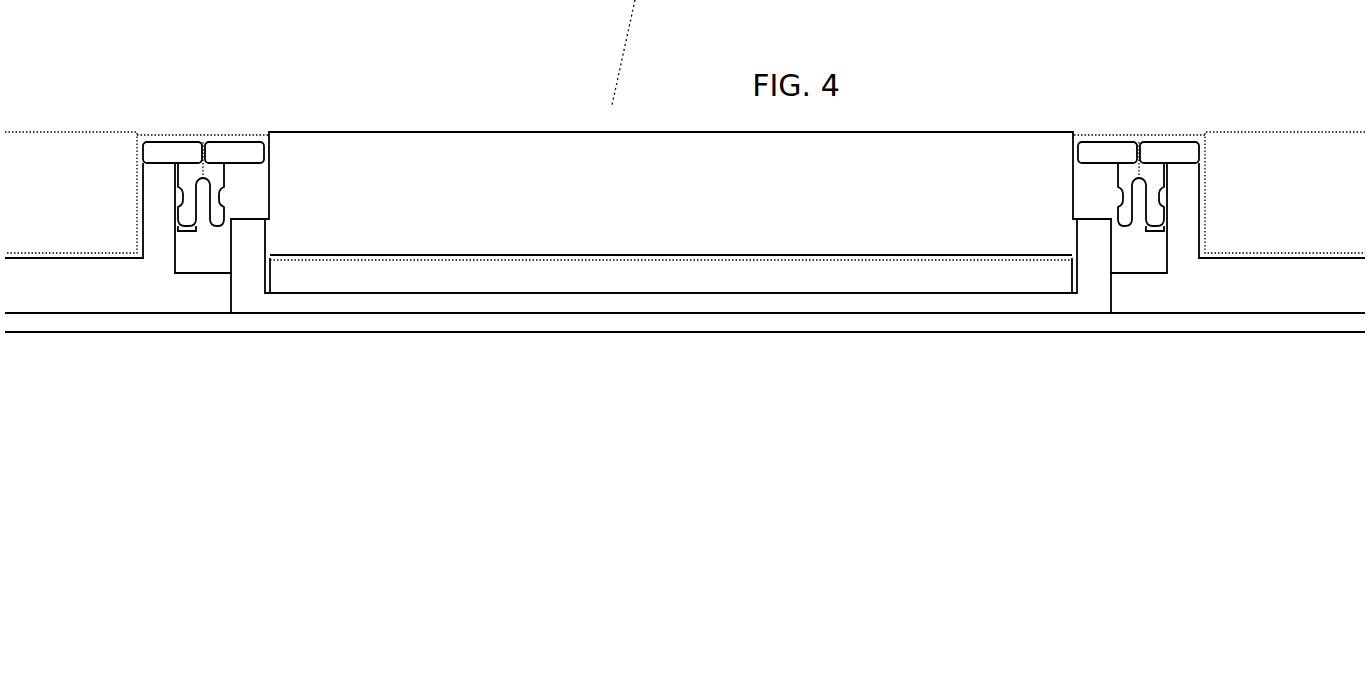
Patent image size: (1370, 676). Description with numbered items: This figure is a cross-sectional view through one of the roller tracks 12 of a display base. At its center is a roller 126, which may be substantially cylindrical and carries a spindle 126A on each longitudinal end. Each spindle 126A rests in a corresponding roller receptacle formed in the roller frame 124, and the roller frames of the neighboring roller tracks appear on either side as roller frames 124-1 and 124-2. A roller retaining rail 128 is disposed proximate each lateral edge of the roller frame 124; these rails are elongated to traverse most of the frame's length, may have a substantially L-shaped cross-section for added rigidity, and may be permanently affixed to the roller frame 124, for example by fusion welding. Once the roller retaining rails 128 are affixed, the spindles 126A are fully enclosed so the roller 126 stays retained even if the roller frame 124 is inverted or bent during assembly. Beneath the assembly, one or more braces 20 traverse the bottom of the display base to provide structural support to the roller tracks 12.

The roller track 12 is at (303, 98).
The brace 20 is at (743, 325).
The roller frame 124 is at (418, 303).
The roller frame of adjacent roller track 124-1 is at (1252, 258).
The roller frame of adjacent roller track 124-2 is at (88, 257).
The roller 126 is at (975, 128).
The spindle 126A is at (248, 160).
The roller retaining rail 128 is at (208, 155).